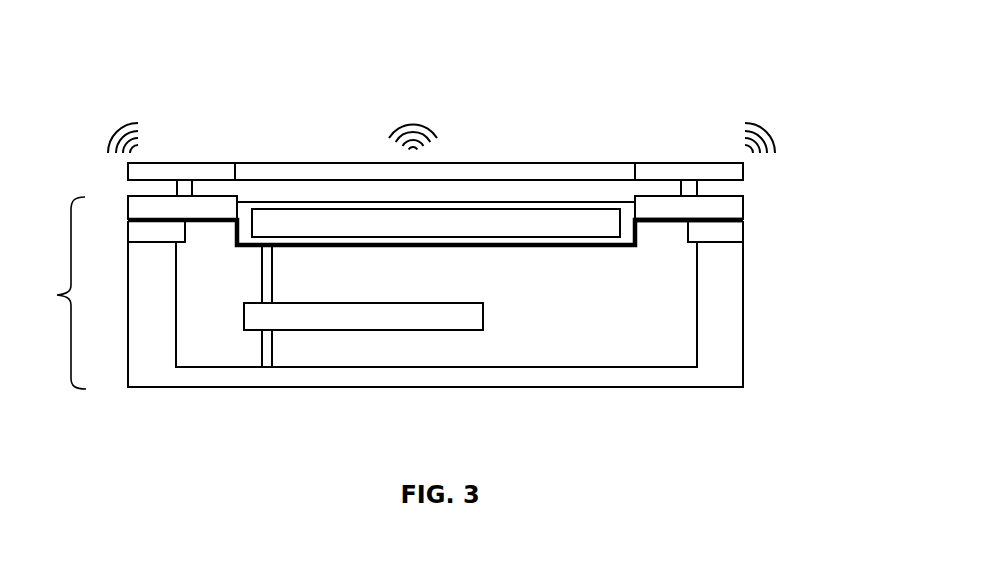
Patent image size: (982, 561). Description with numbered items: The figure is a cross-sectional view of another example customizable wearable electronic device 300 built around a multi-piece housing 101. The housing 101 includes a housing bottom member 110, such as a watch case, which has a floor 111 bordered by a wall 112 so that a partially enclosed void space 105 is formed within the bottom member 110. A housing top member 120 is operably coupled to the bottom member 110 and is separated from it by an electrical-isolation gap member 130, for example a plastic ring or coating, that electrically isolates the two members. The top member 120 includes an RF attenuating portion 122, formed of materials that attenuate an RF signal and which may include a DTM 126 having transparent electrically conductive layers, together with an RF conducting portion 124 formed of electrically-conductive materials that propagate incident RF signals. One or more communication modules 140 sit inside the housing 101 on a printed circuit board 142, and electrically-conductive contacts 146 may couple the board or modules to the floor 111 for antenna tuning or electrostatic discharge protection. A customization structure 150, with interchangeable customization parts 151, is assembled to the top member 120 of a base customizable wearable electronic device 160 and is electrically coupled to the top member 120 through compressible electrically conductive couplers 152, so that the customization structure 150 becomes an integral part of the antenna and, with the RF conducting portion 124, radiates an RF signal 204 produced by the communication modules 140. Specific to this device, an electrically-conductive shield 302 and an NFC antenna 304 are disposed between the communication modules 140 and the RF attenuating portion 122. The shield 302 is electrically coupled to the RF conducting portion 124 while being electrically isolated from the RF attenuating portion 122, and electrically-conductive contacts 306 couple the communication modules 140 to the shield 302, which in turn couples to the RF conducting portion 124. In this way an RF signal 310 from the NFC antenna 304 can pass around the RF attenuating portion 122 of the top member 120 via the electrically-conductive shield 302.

The customizable wearable electronic device 300 is at (742, 31).
The multi-piece housing 101 is at (133, 419).
The void space 105 is at (436, 304).
The housing bottom member 110 is at (322, 401).
The floor 111 is at (560, 388).
The wall 112 is at (746, 337).
The housing top member 120 is at (519, 255).
The RF attenuating portion 122 is at (463, 244).
The RF conducting portion 124 is at (128, 205).
The DTM 126 is at (436, 223).
The electrical-isolation gap member 130 is at (746, 221).
The communication module 140 is at (363, 316).
The printed circuit board 142 is at (363, 316).
The electrically-conductive contacts 146 is at (274, 346).
The customization structure 150 is at (600, 152).
The interchangeable customization part 151 is at (663, 162).
The electrically conductive coupler 152 is at (689, 180).
The base customizable wearable electronic device 160 is at (53, 293).
The RF signal 204 is at (118, 125).
The electrically-conductive shield 302 is at (220, 230).
The NFC antenna 304 is at (428, 203).
The electrically-conductive contacts 306 is at (274, 281).
The RF signal 310 is at (418, 122).